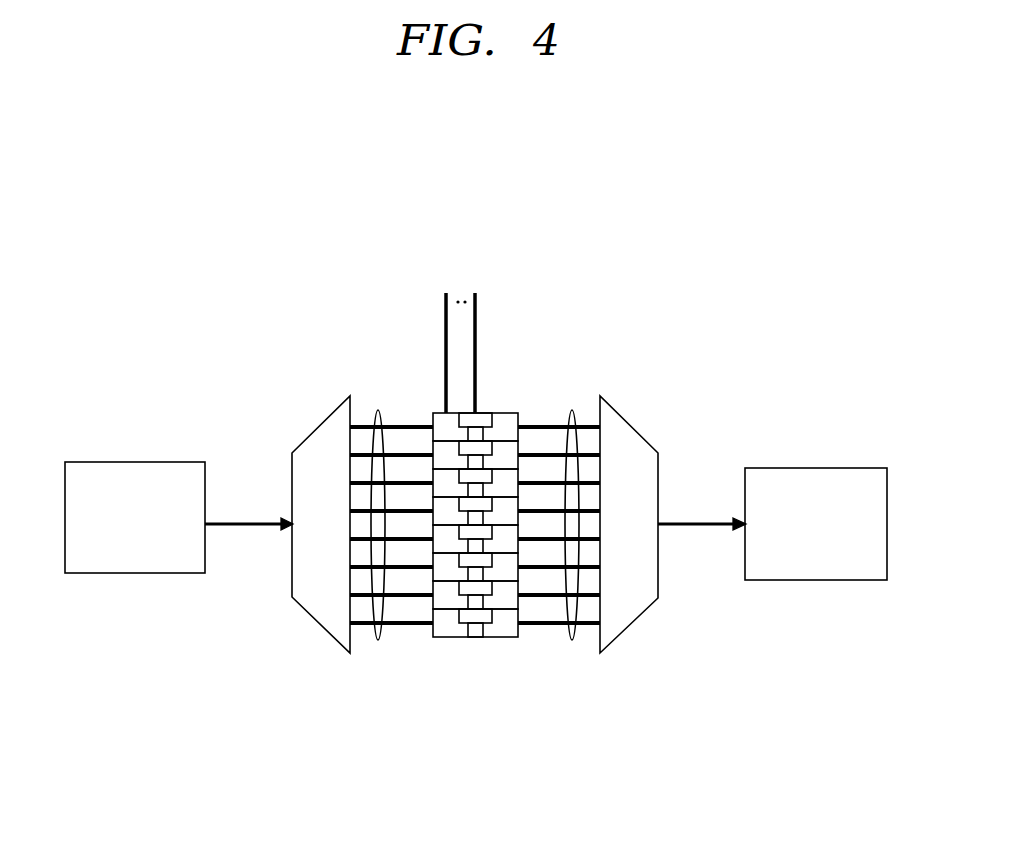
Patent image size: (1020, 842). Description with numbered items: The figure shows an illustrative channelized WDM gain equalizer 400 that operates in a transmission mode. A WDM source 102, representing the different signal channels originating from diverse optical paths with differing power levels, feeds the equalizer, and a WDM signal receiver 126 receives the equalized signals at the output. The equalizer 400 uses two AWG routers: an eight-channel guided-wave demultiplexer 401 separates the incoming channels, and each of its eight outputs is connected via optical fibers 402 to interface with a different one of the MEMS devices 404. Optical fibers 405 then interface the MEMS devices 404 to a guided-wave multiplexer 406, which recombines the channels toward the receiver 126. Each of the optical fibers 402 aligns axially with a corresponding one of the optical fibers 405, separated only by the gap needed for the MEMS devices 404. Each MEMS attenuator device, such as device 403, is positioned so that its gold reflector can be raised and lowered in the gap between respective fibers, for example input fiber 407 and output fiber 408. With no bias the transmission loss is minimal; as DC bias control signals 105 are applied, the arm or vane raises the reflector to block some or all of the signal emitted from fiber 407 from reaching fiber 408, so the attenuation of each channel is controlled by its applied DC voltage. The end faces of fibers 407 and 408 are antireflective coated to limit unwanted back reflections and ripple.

The WDM source 102 is at (136, 462).
The WDM signal receiver 126 is at (817, 468).
The DC bias control signals 105 is at (475, 275).
The channelized WDM gain equalizer 400 is at (473, 554).
The guided-wave demultiplexer 401 is at (319, 627).
The optical fibers 402 is at (378, 642).
The MEMS attenuator device 403 is at (503, 427).
The MEMS devices 404 is at (514, 503).
The optical fibers 405 is at (574, 642).
The guided-wave multiplexer 406 is at (653, 534).
The optical fiber 407 is at (403, 426).
The optical fiber 408 is at (547, 426).